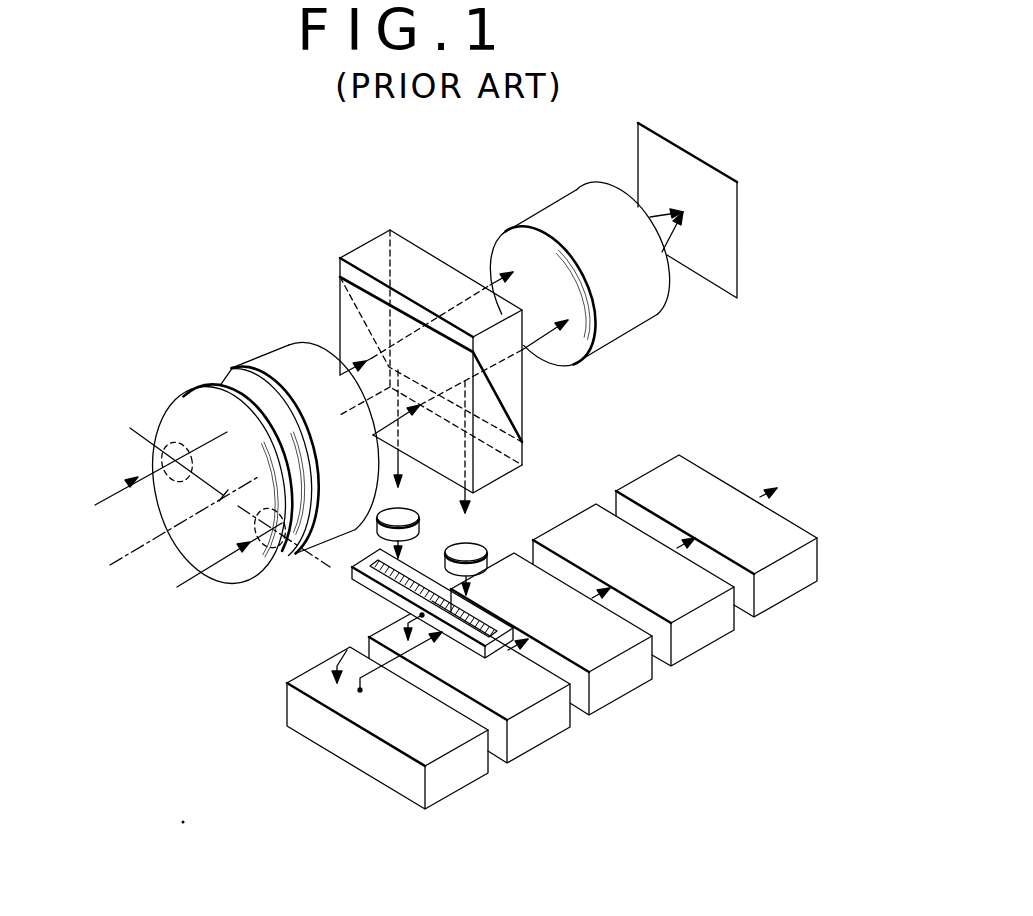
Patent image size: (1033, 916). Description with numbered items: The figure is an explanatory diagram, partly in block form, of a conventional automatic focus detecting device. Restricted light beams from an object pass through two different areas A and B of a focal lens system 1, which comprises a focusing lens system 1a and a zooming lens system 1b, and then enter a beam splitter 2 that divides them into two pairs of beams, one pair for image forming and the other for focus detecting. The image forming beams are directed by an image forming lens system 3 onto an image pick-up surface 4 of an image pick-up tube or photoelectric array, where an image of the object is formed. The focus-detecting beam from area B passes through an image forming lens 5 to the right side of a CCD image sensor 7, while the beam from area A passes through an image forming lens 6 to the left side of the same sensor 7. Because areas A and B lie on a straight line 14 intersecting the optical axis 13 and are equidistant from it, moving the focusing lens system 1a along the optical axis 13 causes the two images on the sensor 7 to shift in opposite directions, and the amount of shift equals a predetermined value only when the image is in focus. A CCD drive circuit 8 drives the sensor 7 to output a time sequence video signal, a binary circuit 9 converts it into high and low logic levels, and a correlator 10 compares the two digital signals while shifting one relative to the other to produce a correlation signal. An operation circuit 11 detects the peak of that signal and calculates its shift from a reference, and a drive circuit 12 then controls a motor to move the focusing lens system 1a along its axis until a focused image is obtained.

The focal lens system 1 is at (273, 272).
The focusing lens system 1a is at (203, 383).
The zooming lens system 1b is at (268, 347).
The beam splitter 2 is at (412, 246).
The image forming lens system 3 is at (561, 197).
The image pick-up surface 4 is at (671, 160).
The image forming lens 5 is at (415, 513).
The image forming lens 6 is at (480, 545).
The CCD image sensor 7 is at (365, 578).
The CCD drive circuit 8 is at (413, 802).
The binary circuit 9 is at (498, 758).
The correlator 10 is at (582, 712).
The operation circuit 11 is at (662, 662).
The drive circuit 12 is at (746, 614).
The optical axis 13 is at (130, 553).
The straight line 14 is at (140, 435).
The area A is at (265, 548).
The area B is at (170, 440).